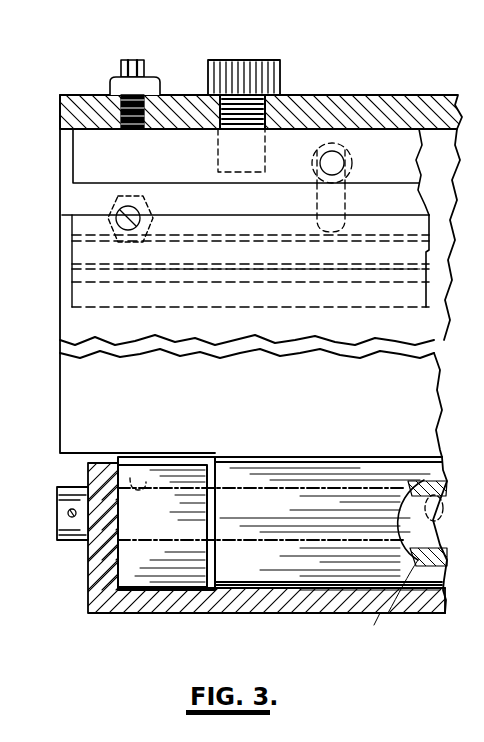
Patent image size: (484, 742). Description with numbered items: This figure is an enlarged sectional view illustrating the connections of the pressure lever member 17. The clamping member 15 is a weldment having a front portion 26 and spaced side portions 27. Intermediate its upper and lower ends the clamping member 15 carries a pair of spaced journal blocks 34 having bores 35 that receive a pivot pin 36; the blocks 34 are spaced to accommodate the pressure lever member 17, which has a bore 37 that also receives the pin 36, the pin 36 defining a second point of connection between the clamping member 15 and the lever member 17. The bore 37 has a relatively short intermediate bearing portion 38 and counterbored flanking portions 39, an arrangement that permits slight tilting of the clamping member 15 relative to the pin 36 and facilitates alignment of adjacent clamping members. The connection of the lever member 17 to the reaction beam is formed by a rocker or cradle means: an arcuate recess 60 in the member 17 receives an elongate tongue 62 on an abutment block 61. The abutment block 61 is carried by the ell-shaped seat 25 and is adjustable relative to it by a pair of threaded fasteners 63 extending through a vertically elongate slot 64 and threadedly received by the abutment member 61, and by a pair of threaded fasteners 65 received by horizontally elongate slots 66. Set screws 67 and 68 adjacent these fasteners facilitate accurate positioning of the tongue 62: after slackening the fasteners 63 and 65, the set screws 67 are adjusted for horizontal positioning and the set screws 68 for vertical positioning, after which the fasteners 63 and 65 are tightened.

The clamping member 15 is at (185, 617).
The pressure lever member 17 is at (60, 290).
The ell-shaped seat 25 is at (60, 118).
The front portion 26 is at (372, 617).
The side portions 27 is at (86, 572).
The journal blocks 34 is at (176, 470).
The bores 35 is at (134, 478).
The pivot pin 36 is at (72, 541).
The bore 37 is at (375, 617).
The intermediate bearing portion 38 is at (436, 517).
The counterbored flanking portions 39 is at (288, 483).
The arcuate recess 60 is at (86, 263).
The abutment block 61 is at (83, 157).
The elongate tongue 62 is at (157, 267).
The threaded fasteners 63 is at (259, 61).
The vertically elongate slot 64 is at (270, 106).
The threaded fasteners 65 is at (345, 163).
The horizontally elongate slots 66 is at (320, 208).
The set screws 67 is at (110, 86).
The set screws 68 is at (108, 218).